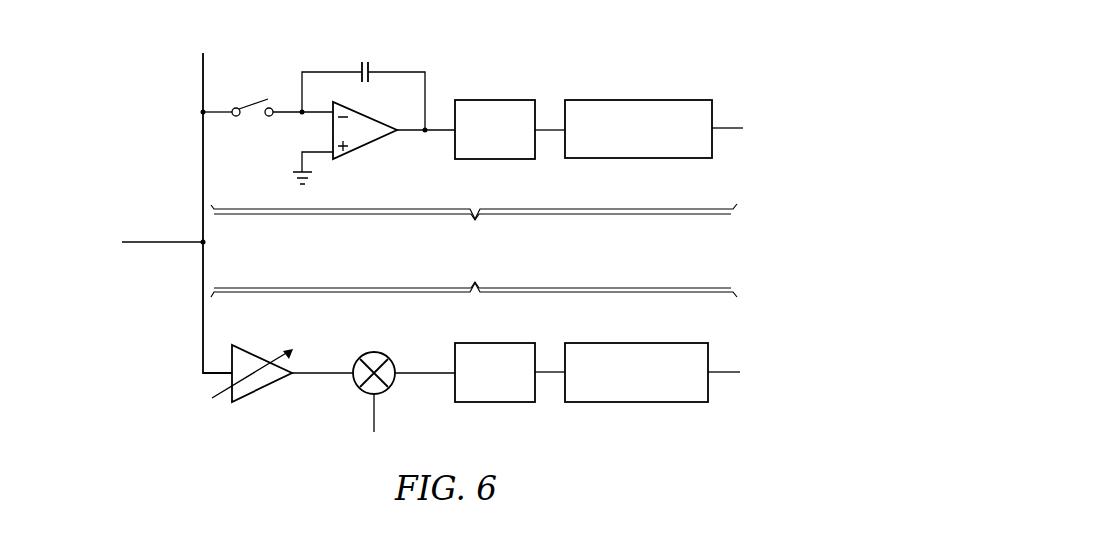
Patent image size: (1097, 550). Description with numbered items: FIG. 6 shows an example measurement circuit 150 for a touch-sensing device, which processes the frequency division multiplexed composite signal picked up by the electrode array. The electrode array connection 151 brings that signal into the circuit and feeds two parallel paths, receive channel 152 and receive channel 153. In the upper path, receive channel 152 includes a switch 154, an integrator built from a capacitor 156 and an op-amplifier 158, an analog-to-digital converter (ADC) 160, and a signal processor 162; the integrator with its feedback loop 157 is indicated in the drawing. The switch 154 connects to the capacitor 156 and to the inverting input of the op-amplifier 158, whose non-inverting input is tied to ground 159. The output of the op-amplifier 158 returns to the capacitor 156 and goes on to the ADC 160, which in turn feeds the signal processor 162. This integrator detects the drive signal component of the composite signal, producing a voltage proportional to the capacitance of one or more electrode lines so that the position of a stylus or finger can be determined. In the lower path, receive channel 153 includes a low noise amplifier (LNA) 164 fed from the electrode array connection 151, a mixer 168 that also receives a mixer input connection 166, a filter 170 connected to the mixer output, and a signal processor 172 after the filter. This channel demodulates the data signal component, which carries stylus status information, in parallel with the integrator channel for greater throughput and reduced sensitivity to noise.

The measurement circuit 150 is at (138, 111).
The electrode array connection 151 is at (163, 240).
The receive channel 152 is at (474, 225).
The receive channel 153 is at (474, 277).
The switch 154 is at (257, 102).
The capacitor 156 is at (362, 60).
The integrator feedback loop 157 is at (410, 49).
The op-amplifier 158 is at (365, 152).
The ground 159 is at (292, 177).
The analog-to-digital converter (ADC) 160 is at (495, 98).
The signal processor 162 is at (640, 98).
The low noise amplifier (LNA) 164 is at (268, 393).
The mixer input connection 166 is at (375, 412).
The mixer 168 is at (373, 352).
The filter 170 is at (495, 403).
The signal processor 172 is at (637, 403).